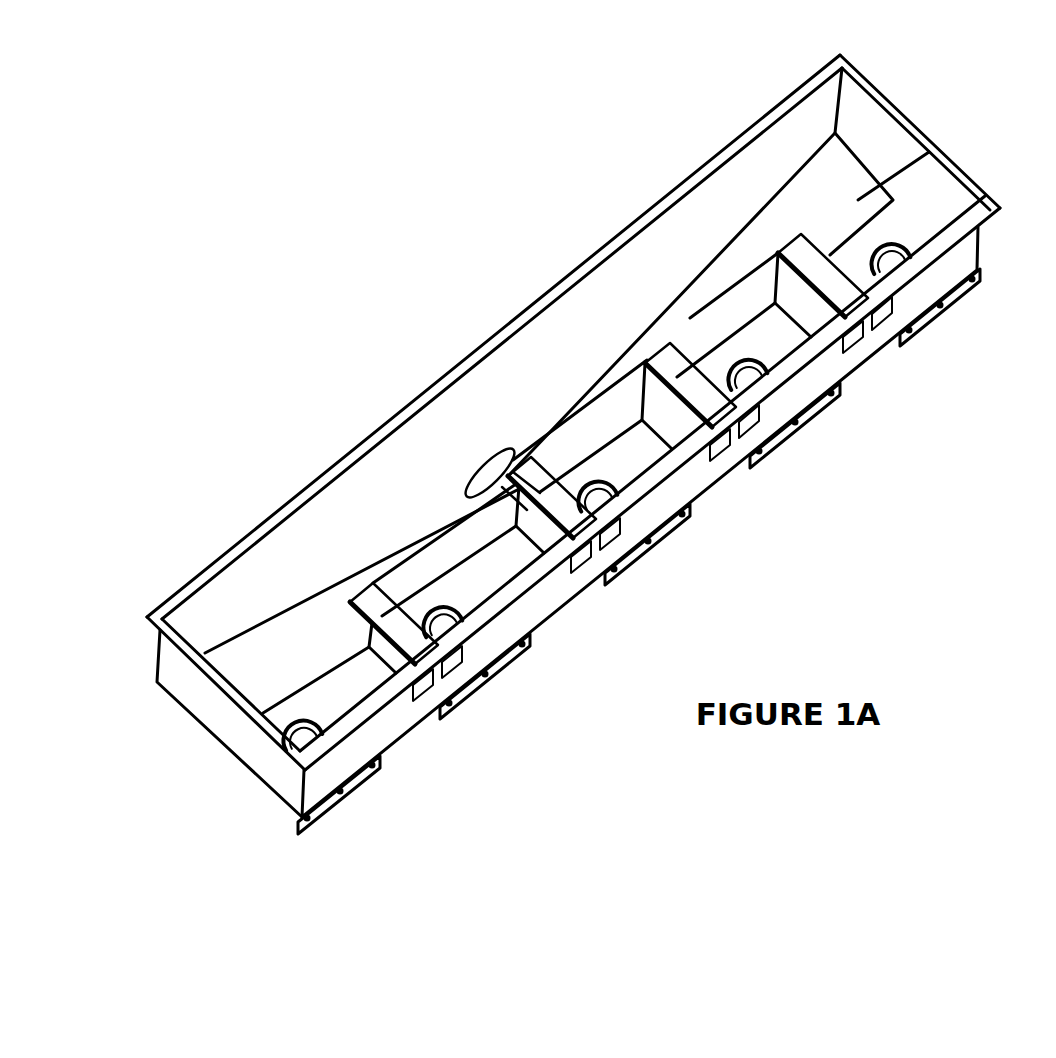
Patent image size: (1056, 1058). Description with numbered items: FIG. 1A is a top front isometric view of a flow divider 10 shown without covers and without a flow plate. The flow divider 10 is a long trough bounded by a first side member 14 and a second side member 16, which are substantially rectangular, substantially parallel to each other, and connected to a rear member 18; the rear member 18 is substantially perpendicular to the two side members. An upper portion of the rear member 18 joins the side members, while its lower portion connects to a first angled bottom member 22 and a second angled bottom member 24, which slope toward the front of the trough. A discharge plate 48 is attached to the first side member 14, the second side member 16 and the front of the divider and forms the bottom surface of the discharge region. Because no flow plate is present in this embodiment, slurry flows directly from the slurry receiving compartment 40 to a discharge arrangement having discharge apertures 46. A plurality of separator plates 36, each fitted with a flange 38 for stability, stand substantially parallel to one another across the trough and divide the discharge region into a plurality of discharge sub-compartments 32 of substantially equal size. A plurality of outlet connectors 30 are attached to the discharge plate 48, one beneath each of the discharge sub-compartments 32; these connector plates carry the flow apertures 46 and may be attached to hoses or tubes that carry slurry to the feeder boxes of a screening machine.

The flow divider 10 is at (345, 402).
The first side member 14 is at (218, 712).
The second side member 16 is at (962, 168).
The rear member 18 is at (648, 232).
The first angled bottom member 22 is at (830, 196).
The second angled bottom member 24 is at (258, 657).
The outlet connector 30 is at (360, 798).
The discharge sub-compartment 32 is at (422, 692).
The separator plate 36 is at (370, 637).
The flange 38 is at (506, 492).
The slurry receiving compartment 40 is at (524, 366).
The discharge aperture 46 is at (319, 730).
The discharge plate 48 is at (348, 678).